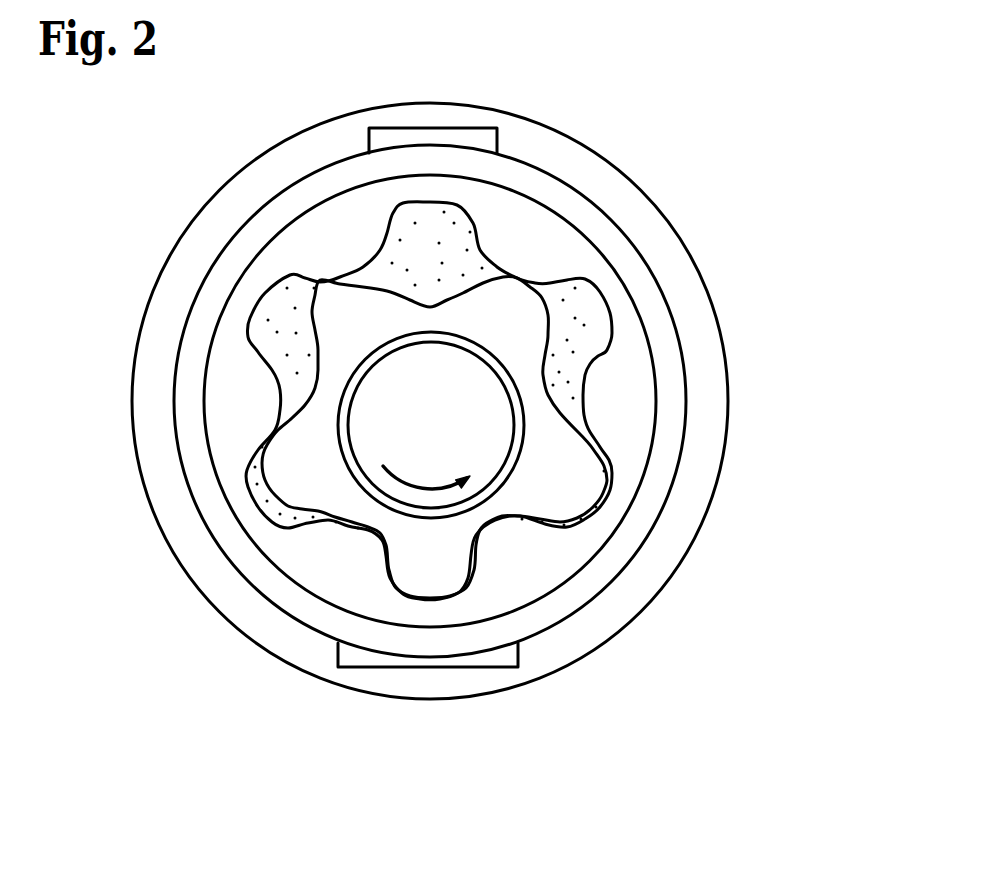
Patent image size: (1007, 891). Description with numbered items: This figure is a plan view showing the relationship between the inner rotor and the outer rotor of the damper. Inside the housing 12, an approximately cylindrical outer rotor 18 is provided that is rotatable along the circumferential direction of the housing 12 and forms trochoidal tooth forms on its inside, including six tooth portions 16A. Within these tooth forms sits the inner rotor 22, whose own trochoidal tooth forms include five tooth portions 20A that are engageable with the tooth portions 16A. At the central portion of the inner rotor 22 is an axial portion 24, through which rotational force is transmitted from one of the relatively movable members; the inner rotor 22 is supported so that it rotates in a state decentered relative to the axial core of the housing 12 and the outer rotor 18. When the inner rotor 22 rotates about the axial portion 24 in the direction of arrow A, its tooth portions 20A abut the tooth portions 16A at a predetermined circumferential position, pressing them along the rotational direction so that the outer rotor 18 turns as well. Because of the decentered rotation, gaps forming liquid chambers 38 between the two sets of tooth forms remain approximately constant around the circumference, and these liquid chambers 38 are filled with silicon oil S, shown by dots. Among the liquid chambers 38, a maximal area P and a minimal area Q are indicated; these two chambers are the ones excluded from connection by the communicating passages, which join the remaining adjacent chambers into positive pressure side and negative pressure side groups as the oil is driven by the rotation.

The housing 12 is at (477, 401).
The outer rotor 18 is at (480, 401).
The tooth portions 20A is at (555, 401).
The tooth portions 16A is at (457, 508).
The axial portion 24 is at (520, 341).
The inner rotor 22 is at (658, 282).
The liquid chambers 38 is at (451, 370).
The maximal area P is at (492, 86).
The silicon oil S is at (515, 163).
The minimal area Q is at (383, 739).
The arrow direction A is at (426, 466).